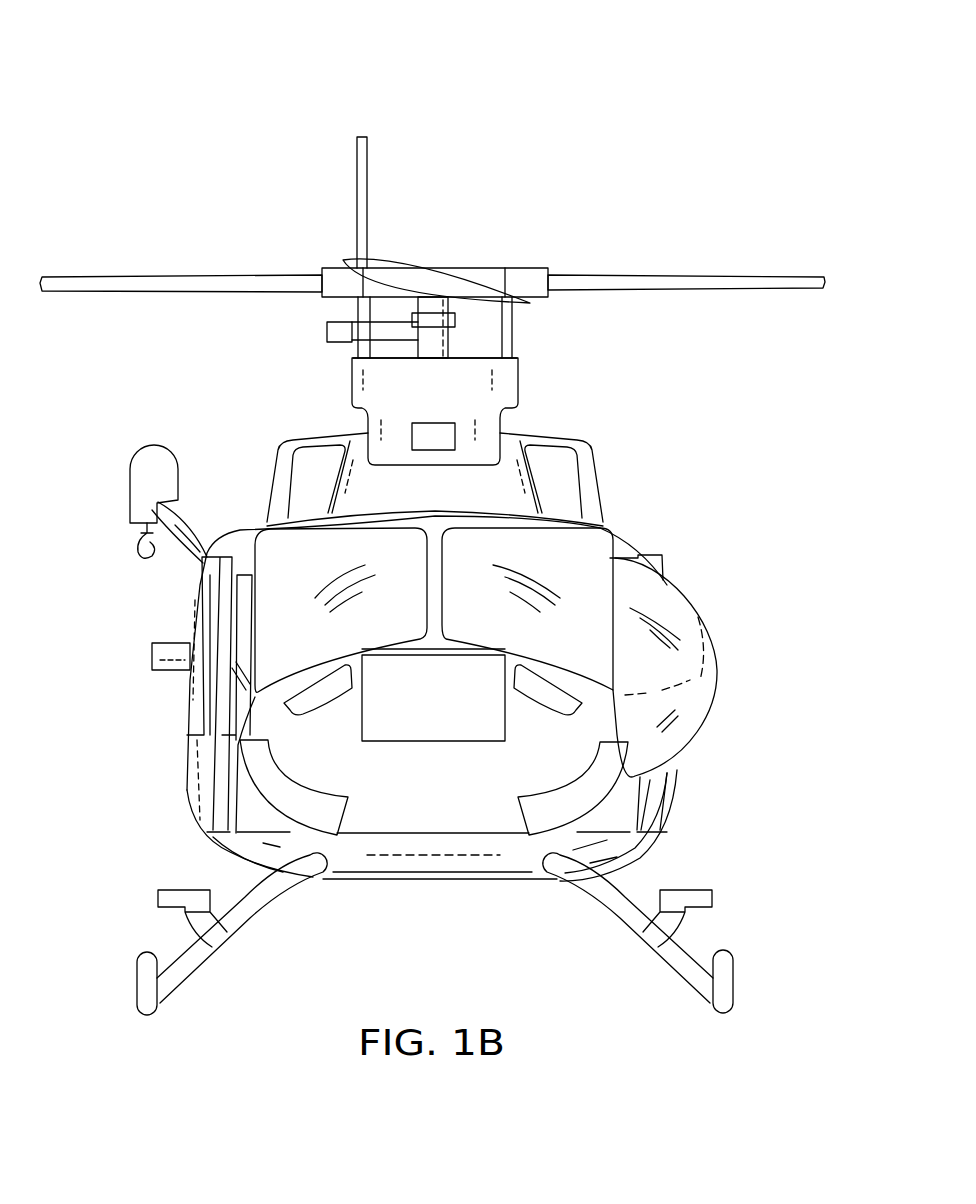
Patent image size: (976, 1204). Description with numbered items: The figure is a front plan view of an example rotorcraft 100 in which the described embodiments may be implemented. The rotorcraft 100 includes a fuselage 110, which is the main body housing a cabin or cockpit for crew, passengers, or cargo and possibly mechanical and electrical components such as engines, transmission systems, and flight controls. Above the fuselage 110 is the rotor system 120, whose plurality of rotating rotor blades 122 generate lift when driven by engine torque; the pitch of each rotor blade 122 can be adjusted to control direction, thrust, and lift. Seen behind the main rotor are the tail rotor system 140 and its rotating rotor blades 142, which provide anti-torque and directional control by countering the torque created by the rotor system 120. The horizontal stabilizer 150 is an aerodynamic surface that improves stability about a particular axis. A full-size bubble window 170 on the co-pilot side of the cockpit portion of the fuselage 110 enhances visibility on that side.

The rotorcraft 100 is at (83, 80).
The fuselage 110 is at (680, 797).
The rotor system 120 is at (456, 241).
The rotor blades 122 is at (668, 274).
The tail rotor system 140 is at (343, 228).
The rotor blades 142 is at (356, 166).
The horizontal stabilizer 150 is at (152, 657).
The bubble window 170 is at (713, 683).